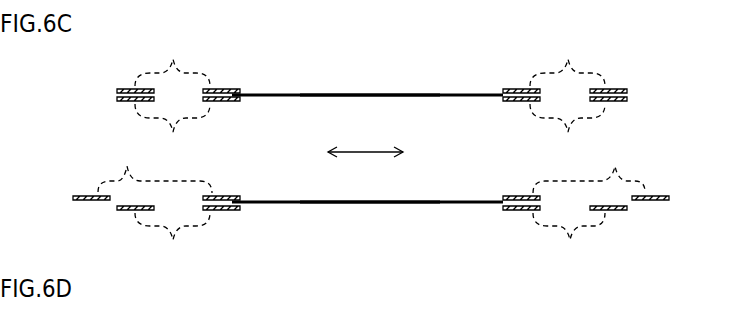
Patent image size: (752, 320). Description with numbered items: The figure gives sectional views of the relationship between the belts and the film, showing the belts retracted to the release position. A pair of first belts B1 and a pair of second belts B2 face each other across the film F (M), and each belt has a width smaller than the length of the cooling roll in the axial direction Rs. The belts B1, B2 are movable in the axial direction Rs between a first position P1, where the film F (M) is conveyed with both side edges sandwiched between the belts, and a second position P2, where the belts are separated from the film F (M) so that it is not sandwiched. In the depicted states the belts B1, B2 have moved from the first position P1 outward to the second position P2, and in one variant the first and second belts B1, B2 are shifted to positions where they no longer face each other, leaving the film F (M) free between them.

In FIG. 6C, the first belt B1 is at (370, 60).
In FIG. 6D, the first belt B1 is at (371, 168).
In FIG. 6C, the second belt B2 is at (370, 132).
In FIG. 6D, the second belt B2 is at (370, 241).
In FIG. 6C, the first position P1 is at (234, 85).
In FIG. 6D, the first position P1 is at (236, 217).
In FIG. 6C, the second position P2 is at (114, 100).
In FIG. 6D, the second position P2 is at (83, 191).
In FIG. 6C, the film F is at (368, 93).
In FIG. 6D, the film F is at (370, 204).
In FIG. 6C, the film M is at (370, 55).
In FIG. 6D, the film M is at (370, 242).
In FIG. 6C, the axial direction Rs is at (365, 140).